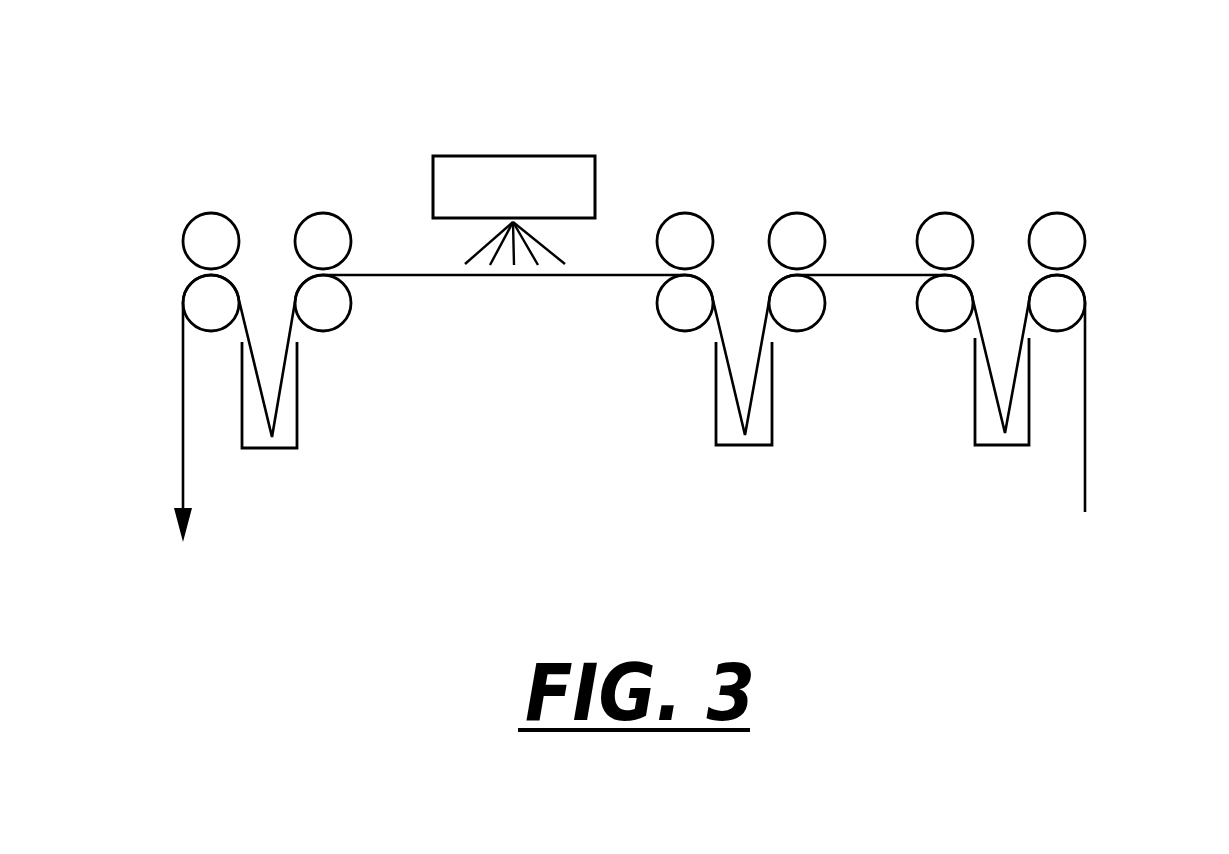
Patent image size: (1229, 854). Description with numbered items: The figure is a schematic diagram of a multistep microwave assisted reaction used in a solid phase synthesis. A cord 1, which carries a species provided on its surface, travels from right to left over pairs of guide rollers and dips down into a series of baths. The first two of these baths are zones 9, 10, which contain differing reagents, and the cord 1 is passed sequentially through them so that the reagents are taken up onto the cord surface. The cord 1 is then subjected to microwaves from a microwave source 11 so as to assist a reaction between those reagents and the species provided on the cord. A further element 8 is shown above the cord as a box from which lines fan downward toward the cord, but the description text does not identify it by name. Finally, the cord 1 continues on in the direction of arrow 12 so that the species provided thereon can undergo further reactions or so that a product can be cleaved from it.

The cord 1 is at (1090, 408).
The spray applicator 8 is at (530, 135).
The zone 9 is at (1004, 462).
The zone 10 is at (760, 464).
The microwave source 11 is at (288, 466).
The arrow 12 is at (165, 422).